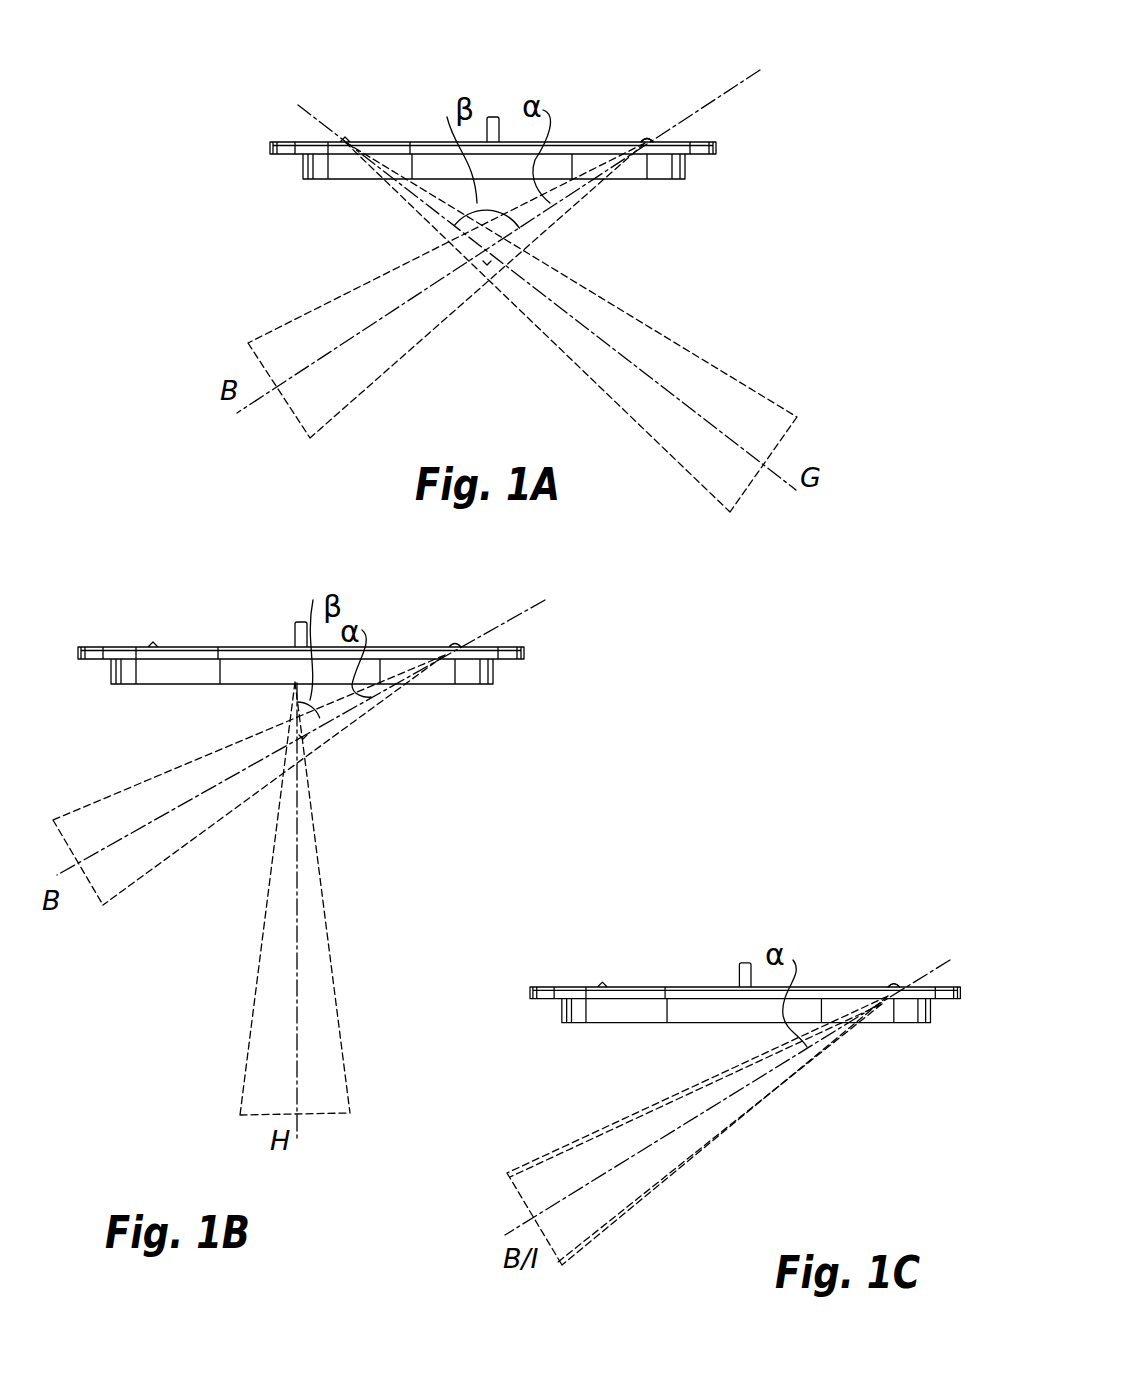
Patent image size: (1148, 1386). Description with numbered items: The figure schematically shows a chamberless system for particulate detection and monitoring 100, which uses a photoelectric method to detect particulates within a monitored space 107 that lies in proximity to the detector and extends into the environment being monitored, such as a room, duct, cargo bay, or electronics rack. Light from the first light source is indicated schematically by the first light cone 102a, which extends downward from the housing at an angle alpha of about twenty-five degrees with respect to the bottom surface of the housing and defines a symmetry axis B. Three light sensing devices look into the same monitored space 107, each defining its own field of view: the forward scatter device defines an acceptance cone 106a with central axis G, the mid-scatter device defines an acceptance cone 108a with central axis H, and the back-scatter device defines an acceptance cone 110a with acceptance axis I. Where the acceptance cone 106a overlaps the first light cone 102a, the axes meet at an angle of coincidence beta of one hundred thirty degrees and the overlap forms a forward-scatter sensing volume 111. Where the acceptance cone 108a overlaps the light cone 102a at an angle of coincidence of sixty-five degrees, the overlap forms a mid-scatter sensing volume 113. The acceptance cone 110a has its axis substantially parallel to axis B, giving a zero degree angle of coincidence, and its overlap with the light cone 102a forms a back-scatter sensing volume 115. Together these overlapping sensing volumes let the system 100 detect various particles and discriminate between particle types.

In FIG. 1A, the chamberless system for particulate detection and monitoring 100 is at (256, 126).
In FIG. 1B, the chamberless system for particulate detection and monitoring 100 is at (104, 613).
In FIG. 1C, the chamberless system for particulate detection and monitoring 100 is at (584, 968).
In FIG. 1A, the first light cone 102a is at (596, 186).
In FIG. 1C, the first light cone 102a is at (830, 1042).
In FIG. 1A, the acceptance cone 106a is at (670, 340).
In FIG. 1A, the monitored space 107 is at (602, 259).
In FIG. 1B, the monitored space 107 is at (377, 841).
In FIG. 1C, the monitored space 107 is at (825, 1132).
In FIG. 1B, the acceptance cone 108a is at (327, 920).
In FIG. 1C, the acceptance cone 110a is at (693, 1150).
In FIG. 1A, the forward-scatter sensing volume 111 is at (487, 266).
In FIG. 1B, the mid-scatter sensing volume 113 is at (304, 739).
In FIG. 1C, the back-scatter sensing volume 115 is at (628, 1138).